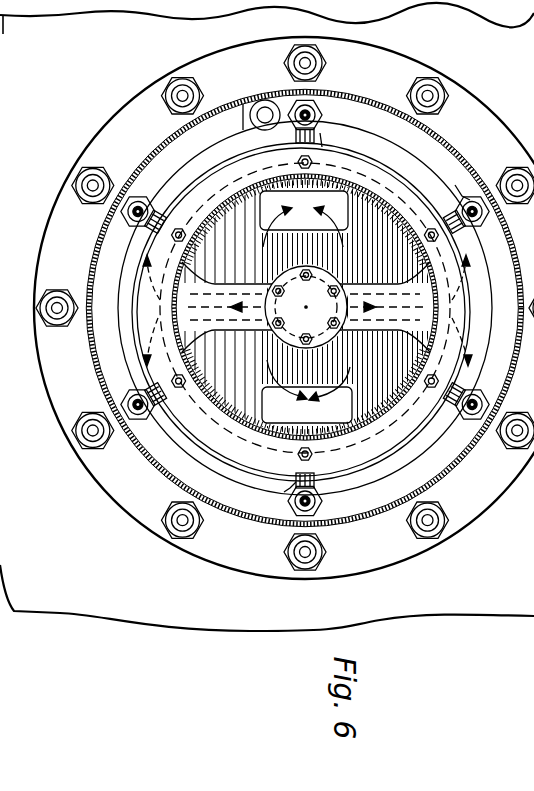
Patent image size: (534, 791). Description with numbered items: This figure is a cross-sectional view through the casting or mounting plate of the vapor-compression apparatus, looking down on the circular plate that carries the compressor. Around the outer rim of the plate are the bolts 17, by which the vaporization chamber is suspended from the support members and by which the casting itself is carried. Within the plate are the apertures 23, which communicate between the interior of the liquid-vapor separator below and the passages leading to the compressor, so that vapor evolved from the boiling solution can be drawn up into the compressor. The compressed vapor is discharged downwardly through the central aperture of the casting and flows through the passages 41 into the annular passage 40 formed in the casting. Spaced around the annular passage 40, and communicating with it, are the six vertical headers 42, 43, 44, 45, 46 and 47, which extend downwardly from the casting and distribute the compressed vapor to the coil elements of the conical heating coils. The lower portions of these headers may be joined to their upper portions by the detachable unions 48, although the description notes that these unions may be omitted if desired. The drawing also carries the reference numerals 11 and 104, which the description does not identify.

The transverse channel 11 is at (390, 312).
The bolts 17 is at (323, 549).
The apertures 23 is at (265, 410).
The annular passage 40 is at (487, 297).
The passages 41 is at (488, 330).
The vertical header 42 is at (284, 492).
The vertical header 43 is at (143, 417).
The vertical header 44 is at (123, 230).
The vertical header 45 is at (323, 114).
The vertical header 46 is at (316, 324).
The vertical header 47 is at (462, 196).
The detachable unions 48 is at (482, 227).
The outer ring 104 is at (297, 567).